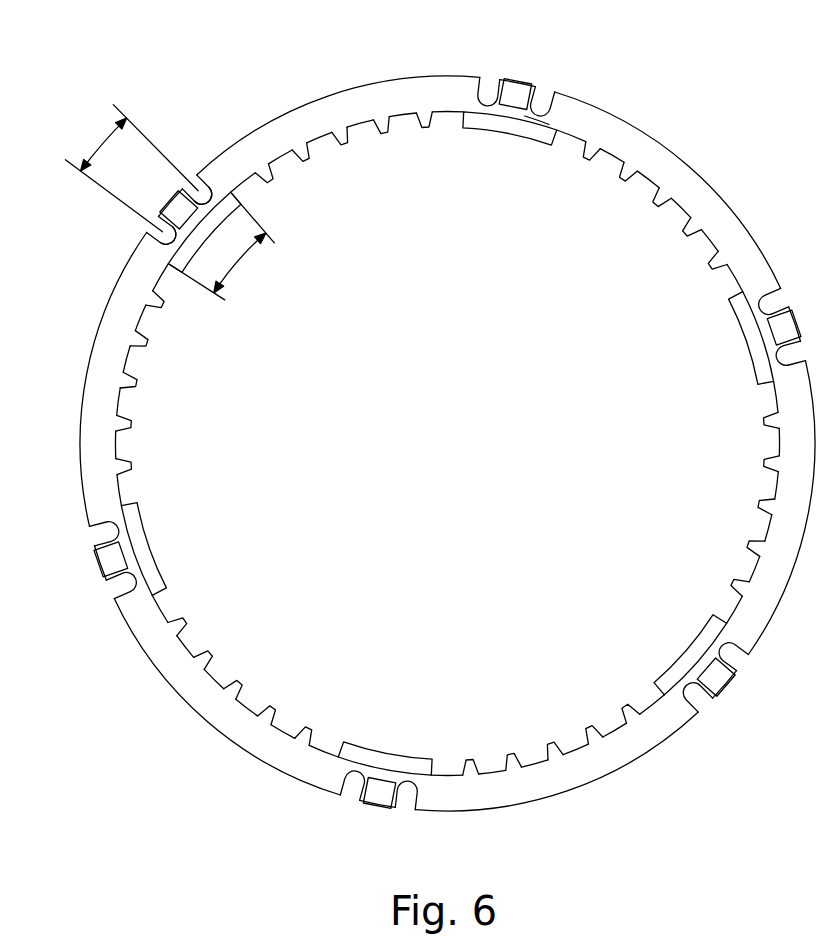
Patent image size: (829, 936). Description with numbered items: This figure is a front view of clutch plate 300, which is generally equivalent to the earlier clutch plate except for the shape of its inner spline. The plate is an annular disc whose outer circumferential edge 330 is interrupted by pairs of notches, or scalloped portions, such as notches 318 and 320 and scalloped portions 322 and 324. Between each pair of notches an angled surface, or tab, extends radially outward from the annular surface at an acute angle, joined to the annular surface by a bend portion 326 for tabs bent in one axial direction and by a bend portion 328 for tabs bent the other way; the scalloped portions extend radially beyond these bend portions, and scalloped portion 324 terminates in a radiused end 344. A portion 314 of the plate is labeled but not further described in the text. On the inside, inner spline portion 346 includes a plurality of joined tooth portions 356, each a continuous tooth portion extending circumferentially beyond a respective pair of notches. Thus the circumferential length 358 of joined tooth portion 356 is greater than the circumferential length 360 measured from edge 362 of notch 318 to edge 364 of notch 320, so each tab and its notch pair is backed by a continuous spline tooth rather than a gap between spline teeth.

The clutch plate 300 is at (652, 90).
The ring body 314 is at (336, 107).
The notch 318 is at (150, 220).
The notch 320 is at (193, 183).
The scalloped portion 322 is at (491, 84).
The scalloped portion 324 is at (543, 95).
The bend portion 326 is at (173, 205).
The bend portion 328 is at (518, 90).
The circumferential edge 330 is at (400, 78).
The radiused end 344 is at (538, 117).
The inner spline portion 346 is at (246, 688).
The joined tooth portion 356 is at (173, 265).
The circumferential length 358 is at (235, 267).
The circumferential length 360 is at (88, 163).
The edge 362 is at (152, 237).
The edge 364 is at (206, 182).